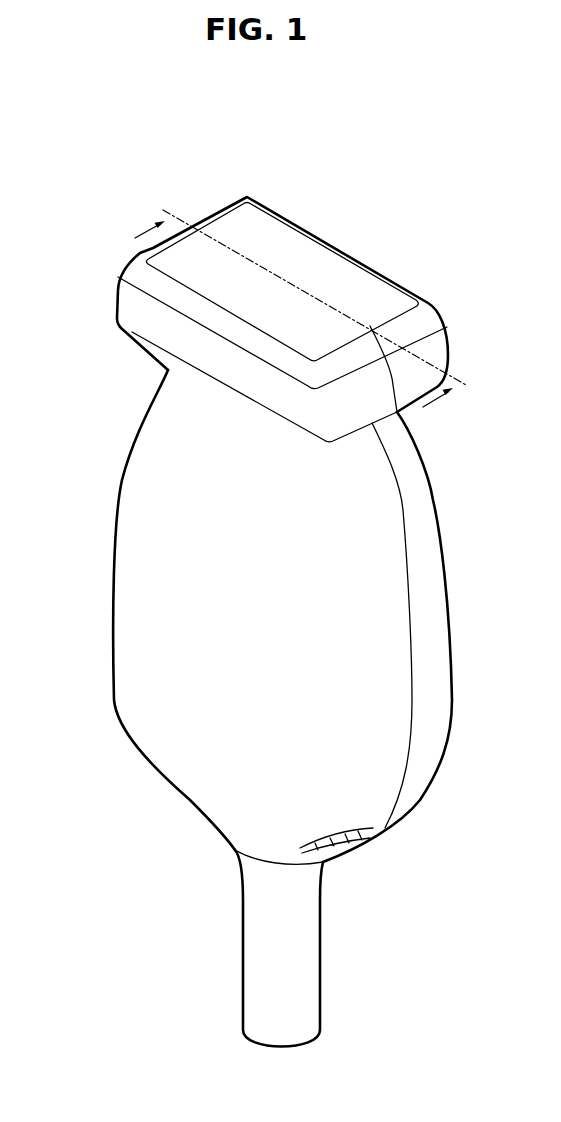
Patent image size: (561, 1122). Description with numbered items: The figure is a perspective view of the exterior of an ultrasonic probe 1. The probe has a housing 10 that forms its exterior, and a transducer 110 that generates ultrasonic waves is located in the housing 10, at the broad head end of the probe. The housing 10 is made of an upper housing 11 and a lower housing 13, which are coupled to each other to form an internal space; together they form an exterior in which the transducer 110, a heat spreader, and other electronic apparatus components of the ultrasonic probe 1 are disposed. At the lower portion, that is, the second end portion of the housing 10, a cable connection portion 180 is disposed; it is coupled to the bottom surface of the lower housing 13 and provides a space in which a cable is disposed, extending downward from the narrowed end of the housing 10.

The ultrasonic probe 1 is at (72, 151).
The housing 10 is at (82, 368).
The upper housing 11 is at (153, 332).
The lower housing 13 is at (148, 473).
The transducer 110 is at (341, 291).
The cable connection portion 180 is at (302, 973).